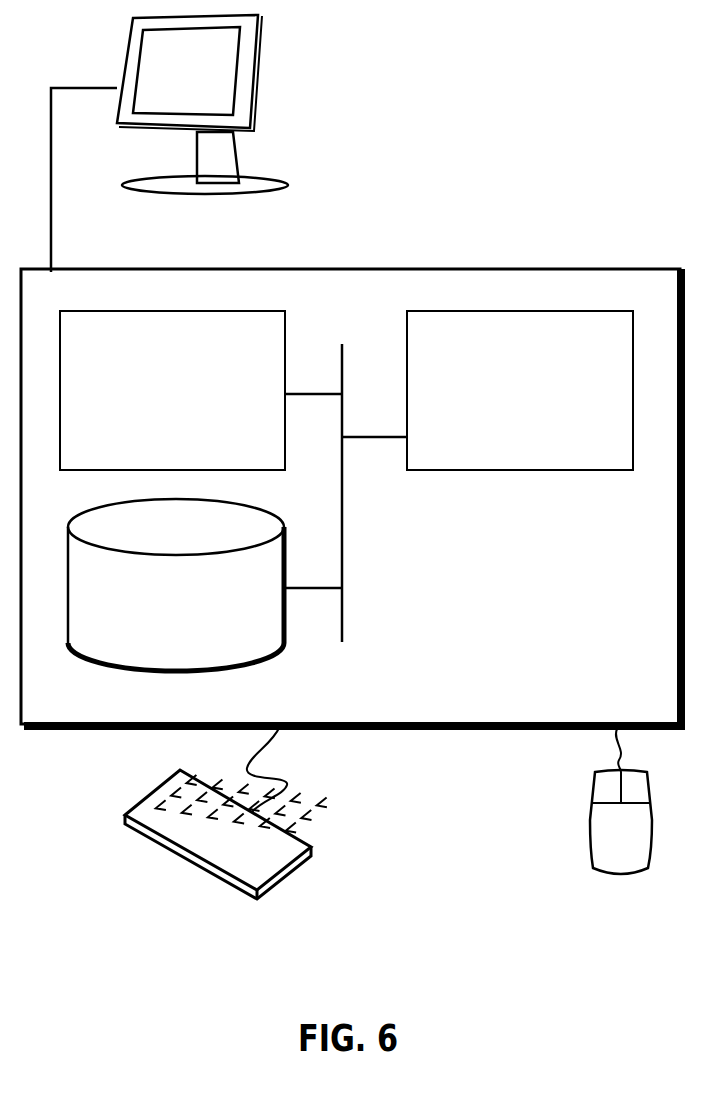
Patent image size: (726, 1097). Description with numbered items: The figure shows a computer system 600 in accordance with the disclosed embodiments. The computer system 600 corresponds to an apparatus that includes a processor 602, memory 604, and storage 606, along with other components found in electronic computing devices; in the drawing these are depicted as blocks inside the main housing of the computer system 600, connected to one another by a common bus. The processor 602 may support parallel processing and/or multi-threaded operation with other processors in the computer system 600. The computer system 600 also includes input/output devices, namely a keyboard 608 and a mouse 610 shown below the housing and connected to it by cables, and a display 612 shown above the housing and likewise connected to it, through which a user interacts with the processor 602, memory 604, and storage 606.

The computer system 600 is at (397, 247).
The processor 602 is at (544, 402).
The memory 604 is at (193, 402).
The storage 606 is at (200, 614).
The keyboard 608 is at (130, 828).
The mouse 610 is at (641, 844).
The display 612 is at (169, 143).